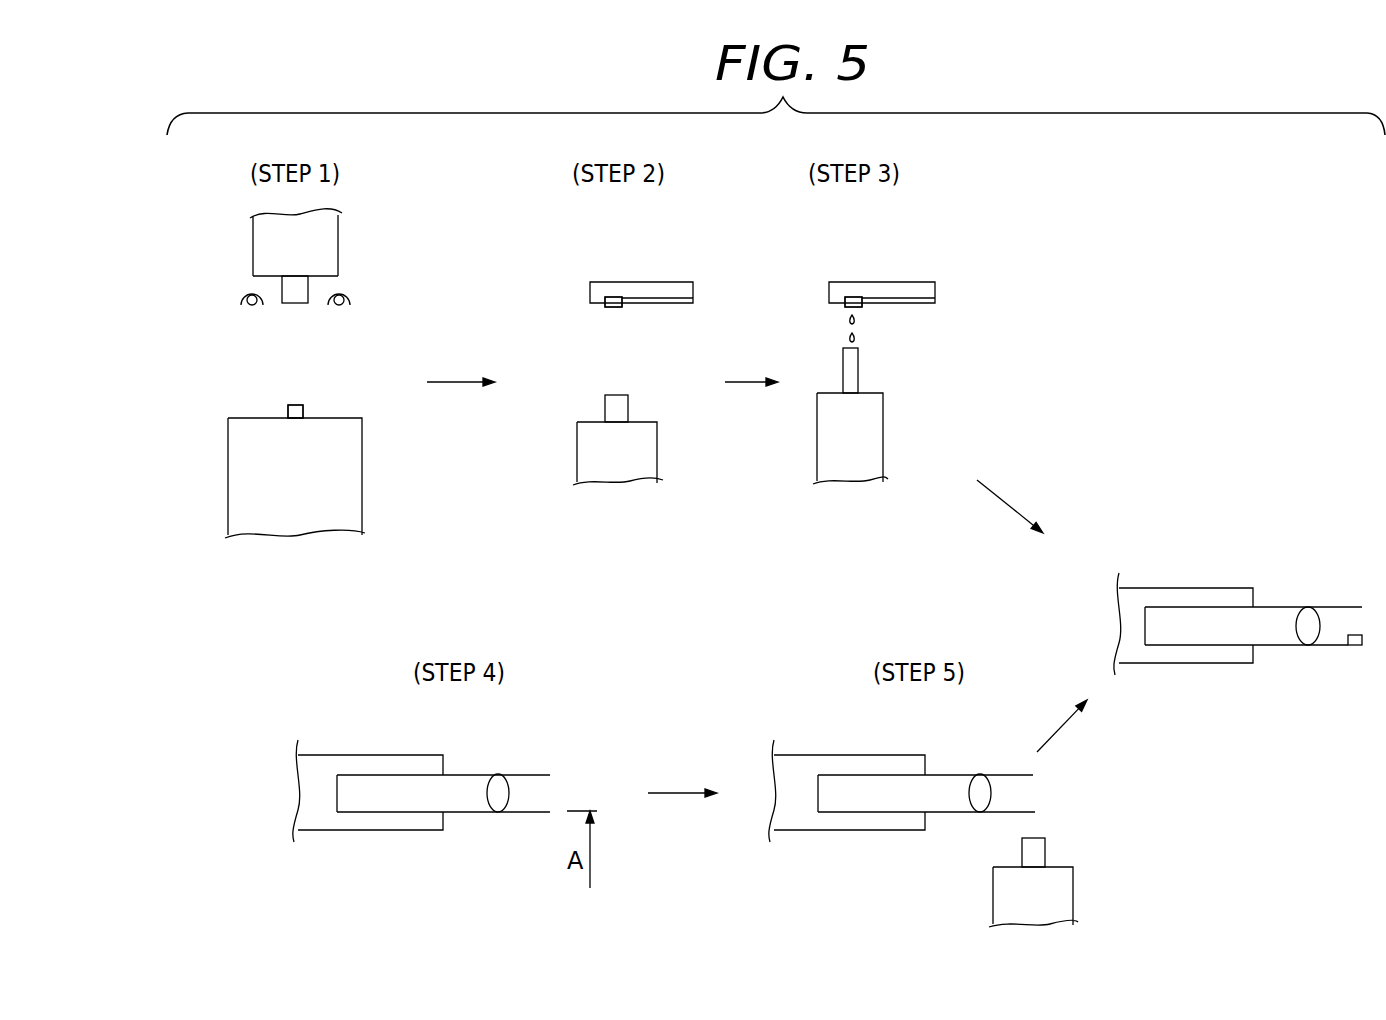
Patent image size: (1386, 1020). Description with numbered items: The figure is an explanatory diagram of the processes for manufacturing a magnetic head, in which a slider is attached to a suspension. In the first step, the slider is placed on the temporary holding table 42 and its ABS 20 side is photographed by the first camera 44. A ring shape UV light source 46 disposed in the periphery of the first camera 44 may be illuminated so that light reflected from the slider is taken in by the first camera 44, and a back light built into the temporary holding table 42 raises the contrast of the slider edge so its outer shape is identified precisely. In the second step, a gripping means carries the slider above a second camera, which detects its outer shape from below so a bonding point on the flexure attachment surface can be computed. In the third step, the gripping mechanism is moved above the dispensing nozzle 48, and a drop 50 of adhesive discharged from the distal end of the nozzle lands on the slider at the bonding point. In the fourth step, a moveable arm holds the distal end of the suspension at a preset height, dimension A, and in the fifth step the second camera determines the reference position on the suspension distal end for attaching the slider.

The ABS 20 is at (293, 406).
The temporary holding table 42 is at (255, 423).
The first camera 44 is at (295, 303).
The ring shape UV light source 46 is at (242, 291).
The dispensing nozzle 48 is at (855, 365).
The drop 50 is at (857, 320).